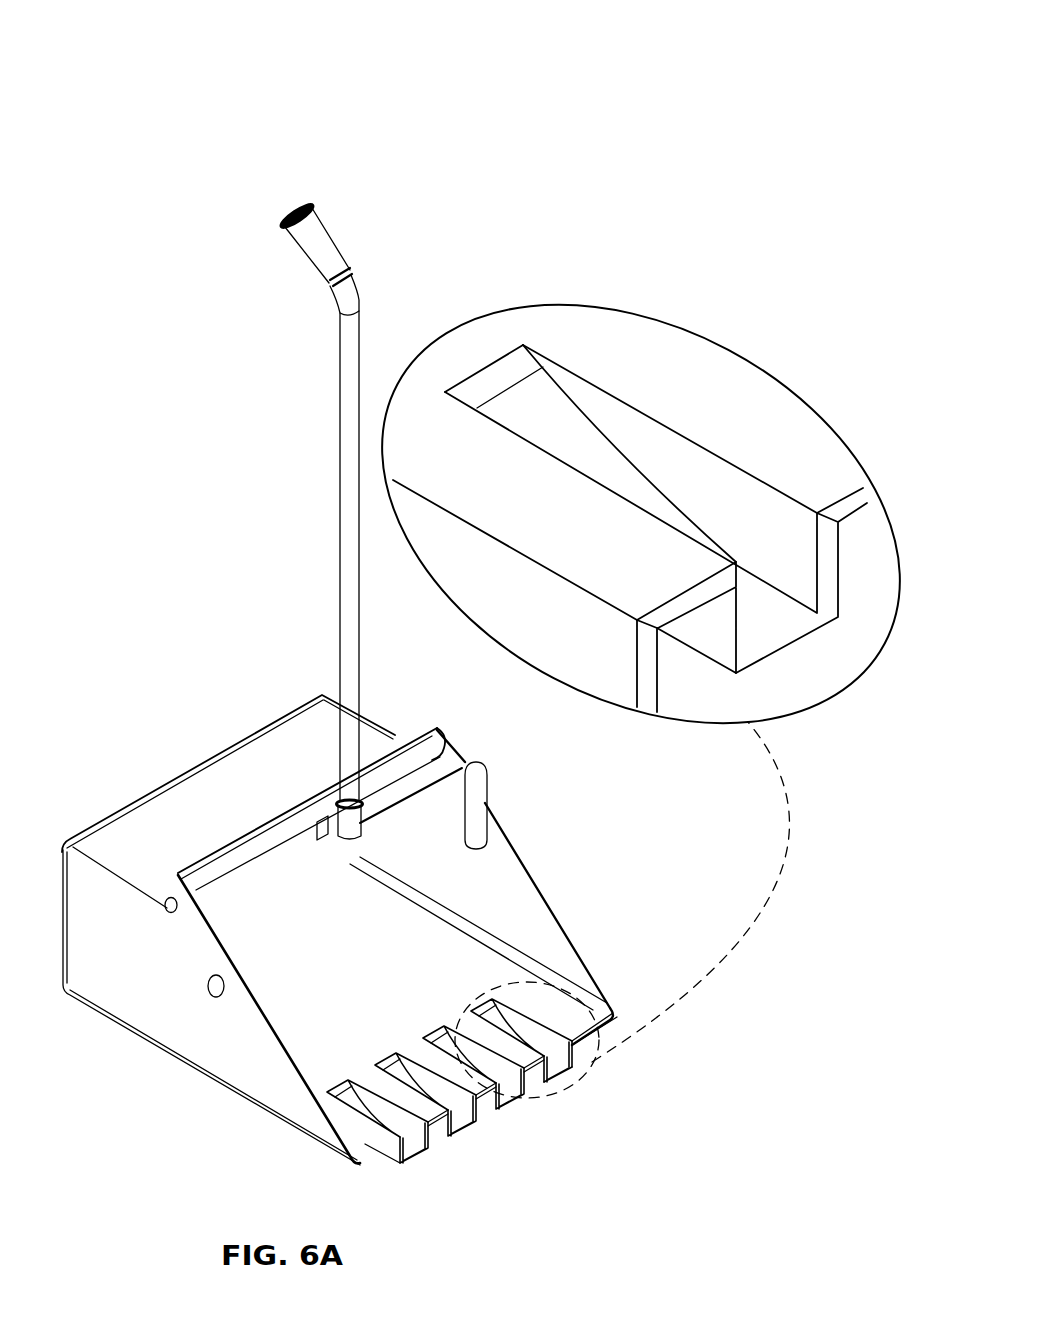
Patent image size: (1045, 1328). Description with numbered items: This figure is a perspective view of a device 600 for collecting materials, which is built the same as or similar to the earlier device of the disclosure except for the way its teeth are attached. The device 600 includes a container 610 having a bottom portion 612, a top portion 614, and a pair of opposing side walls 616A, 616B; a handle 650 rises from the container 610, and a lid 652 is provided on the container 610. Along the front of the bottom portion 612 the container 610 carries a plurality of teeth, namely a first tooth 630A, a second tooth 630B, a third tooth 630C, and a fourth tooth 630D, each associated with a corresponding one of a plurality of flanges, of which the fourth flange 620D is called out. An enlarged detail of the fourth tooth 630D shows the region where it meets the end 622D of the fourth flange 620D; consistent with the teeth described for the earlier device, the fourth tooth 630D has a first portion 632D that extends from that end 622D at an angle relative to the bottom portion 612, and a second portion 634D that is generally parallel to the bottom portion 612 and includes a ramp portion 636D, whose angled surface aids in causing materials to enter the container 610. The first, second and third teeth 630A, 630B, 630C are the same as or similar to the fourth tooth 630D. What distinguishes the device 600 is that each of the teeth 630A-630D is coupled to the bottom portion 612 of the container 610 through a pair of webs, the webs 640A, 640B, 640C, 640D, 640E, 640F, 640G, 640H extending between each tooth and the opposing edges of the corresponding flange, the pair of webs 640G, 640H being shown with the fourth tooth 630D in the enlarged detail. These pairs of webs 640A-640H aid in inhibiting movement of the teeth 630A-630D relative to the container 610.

The device 600 is at (205, 90).
The container 610 is at (185, 722).
The bottom portion 612 is at (331, 955).
The top portion 614 is at (190, 795).
The side wall 616A is at (117, 985).
The side wall 616B is at (540, 907).
The flange 620D is at (788, 490).
The flat portion 622D is at (503, 360).
The first tooth 630A is at (423, 1164).
The second tooth 630B is at (486, 1147).
The third tooth 630C is at (535, 1118).
The fourth tooth 630D is at (573, 1087).
The ramp surface 632D is at (577, 430).
The notch floor 634D is at (748, 623).
The notch side wall 636D is at (830, 614).
The web 640A is at (342, 1087).
The web 640B is at (383, 1147).
The web 640C is at (390, 1065).
The web 640D is at (518, 1110).
The web 640E is at (438, 1042).
The web 640F is at (562, 1082).
The web 640G is at (707, 630).
The web 640H is at (730, 478).
The handle 650 is at (340, 452).
The lid 652 is at (462, 770).